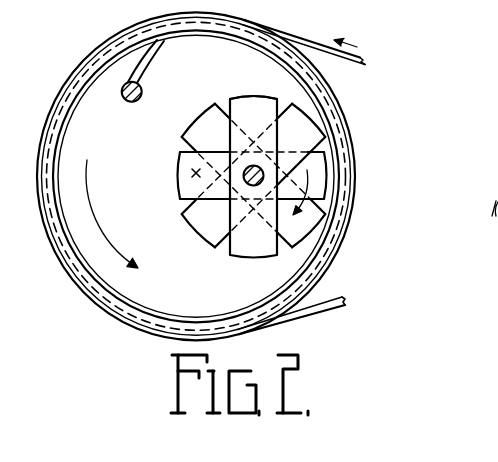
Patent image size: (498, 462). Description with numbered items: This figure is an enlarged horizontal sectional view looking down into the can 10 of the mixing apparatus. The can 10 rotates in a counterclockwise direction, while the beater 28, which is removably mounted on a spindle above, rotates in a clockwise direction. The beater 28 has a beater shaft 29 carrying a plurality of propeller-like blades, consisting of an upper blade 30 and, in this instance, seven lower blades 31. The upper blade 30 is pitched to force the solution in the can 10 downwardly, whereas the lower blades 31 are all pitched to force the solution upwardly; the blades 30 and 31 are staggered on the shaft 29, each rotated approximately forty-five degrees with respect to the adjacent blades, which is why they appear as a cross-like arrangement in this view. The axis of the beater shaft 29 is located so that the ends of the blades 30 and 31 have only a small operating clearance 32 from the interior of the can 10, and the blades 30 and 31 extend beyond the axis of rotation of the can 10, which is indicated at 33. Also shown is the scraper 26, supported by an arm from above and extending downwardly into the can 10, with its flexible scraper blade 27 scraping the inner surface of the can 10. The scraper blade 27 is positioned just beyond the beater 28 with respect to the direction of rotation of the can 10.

The can 10 is at (340, 243).
The scraper 26 is at (137, 100).
The scraper blade 27 is at (152, 58).
The beater 28 is at (276, 263).
The beater shaft 29 is at (306, 134).
The upper blade 30 is at (272, 106).
The lower blades 31 is at (320, 146).
The clearance 32 is at (342, 196).
The axis of rotation of the can 33 is at (192, 173).